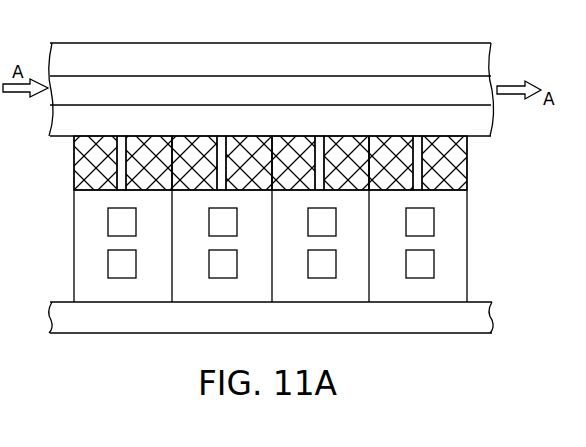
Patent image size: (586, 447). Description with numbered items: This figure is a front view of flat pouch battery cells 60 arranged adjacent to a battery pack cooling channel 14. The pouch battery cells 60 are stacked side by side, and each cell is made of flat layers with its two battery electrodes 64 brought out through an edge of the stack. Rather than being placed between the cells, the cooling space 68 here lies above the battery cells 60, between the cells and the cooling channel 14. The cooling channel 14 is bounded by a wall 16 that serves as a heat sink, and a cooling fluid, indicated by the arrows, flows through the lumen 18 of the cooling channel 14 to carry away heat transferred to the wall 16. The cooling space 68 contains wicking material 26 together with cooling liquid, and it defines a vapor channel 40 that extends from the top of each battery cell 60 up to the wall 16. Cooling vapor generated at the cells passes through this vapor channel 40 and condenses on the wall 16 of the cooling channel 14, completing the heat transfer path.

The cooling channel 14 is at (436, 32).
The wall 16 is at (476, 60).
The lumen 18 is at (192, 103).
The wicking material 26 is at (244, 152).
The vapor channel 40 is at (121, 150).
The pouch battery cell 60 is at (163, 295).
The battery electrodes 64 is at (125, 254).
The cooling space 68 is at (139, 180).